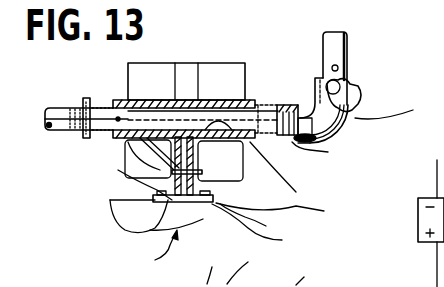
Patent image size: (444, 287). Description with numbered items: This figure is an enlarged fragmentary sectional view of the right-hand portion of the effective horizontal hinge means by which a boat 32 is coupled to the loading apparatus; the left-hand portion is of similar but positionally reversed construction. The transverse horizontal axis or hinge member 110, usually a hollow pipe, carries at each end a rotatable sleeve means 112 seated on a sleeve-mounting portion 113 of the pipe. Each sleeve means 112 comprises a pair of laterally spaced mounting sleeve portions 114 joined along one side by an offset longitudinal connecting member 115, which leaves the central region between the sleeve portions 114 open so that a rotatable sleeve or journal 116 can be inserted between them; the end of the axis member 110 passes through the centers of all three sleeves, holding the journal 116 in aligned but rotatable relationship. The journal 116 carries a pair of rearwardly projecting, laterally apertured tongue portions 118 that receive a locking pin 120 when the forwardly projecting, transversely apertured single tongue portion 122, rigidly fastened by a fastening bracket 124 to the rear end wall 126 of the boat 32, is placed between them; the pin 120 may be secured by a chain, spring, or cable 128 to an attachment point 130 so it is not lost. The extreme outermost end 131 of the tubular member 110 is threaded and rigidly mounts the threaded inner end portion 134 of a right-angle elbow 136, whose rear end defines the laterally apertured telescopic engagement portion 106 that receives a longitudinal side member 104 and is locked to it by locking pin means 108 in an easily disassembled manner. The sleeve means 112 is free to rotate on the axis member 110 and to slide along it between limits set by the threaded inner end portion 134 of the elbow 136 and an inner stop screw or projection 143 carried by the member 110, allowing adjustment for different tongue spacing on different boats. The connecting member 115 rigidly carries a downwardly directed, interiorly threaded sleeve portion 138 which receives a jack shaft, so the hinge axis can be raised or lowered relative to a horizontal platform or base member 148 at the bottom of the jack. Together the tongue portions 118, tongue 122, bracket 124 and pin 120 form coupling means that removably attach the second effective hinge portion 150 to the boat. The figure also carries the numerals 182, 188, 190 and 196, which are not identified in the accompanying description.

The boat 32 is at (154, 251).
The longitudinal side member 104 is at (352, 42).
The telescopic engagement portion 106 is at (351, 68).
The locking pin means 108 is at (353, 80).
The transverse horizontal axis or hinge member 110 is at (54, 134).
The rotatable sleeve means 112 is at (291, 172).
The sleeve-mounting portion 113 is at (130, 99).
The mounting sleeve portion 114 is at (112, 152).
The connecting member 115 is at (245, 102).
The rotatable sleeve or journal 116 is at (141, 186).
The tongue portions 118 is at (178, 203).
The locking pin 120 is at (215, 198).
The single tongue portion 122 is at (216, 167).
The fastening bracket 124 is at (130, 234).
The rear end wall 126 is at (265, 226).
The chain, spring, or cable 128 is at (127, 150).
The attachment point 130 is at (157, 113).
The extreme outermost end 131 is at (338, 140).
The threaded inner end portion 134 is at (328, 152).
The right-angle elbow 136 is at (399, 112).
The interiorly threaded sleeve portion 138 is at (207, 117).
The inner stop screw or projection 143 is at (82, 100).
The horizontal platform or base member 148 is at (261, 218).
The second effective hinge portion 150 is at (289, 212).
The power source 182 is at (403, 231).
The lead 188 is at (206, 265).
The lead 190 is at (319, 276).
The lead 196 is at (255, 263).